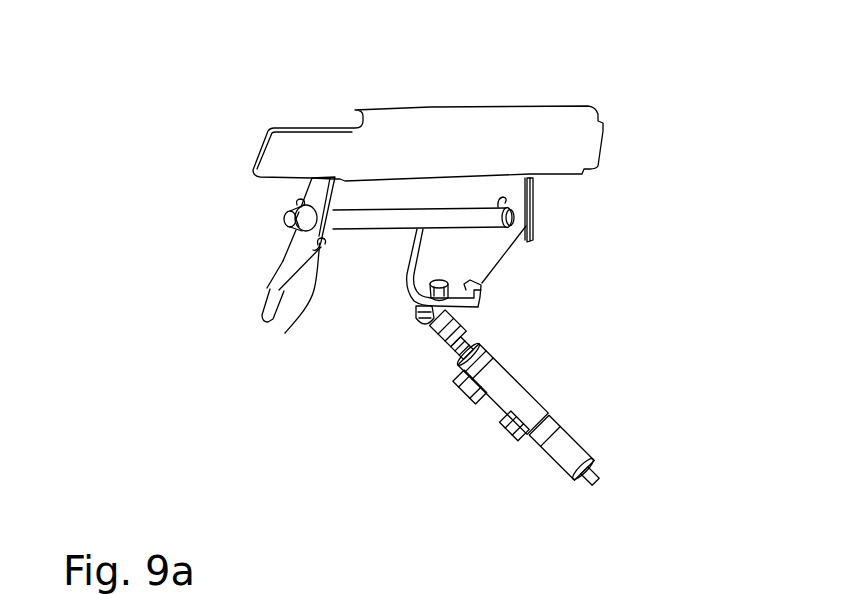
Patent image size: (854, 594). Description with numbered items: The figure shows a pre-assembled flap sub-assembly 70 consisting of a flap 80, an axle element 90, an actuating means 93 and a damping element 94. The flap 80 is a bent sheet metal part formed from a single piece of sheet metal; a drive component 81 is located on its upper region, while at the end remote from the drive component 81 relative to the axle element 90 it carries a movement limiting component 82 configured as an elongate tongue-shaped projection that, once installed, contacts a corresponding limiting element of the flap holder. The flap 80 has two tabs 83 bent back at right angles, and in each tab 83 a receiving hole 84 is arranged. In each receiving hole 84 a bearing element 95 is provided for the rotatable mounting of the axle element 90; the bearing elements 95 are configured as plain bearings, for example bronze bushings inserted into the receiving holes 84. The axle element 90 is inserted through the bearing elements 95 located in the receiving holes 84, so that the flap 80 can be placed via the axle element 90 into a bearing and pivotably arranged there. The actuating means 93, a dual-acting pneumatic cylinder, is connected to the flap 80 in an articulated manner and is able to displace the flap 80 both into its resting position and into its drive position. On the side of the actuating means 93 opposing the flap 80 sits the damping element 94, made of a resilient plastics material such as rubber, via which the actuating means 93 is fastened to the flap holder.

The flap sub-assembly 70 is at (203, 99).
The flap 80 is at (617, 153).
The drive component 81 is at (462, 146).
The movement limiting component 82 is at (262, 308).
The tabs 83 is at (290, 249).
The receiving hole 84 is at (284, 204).
The axle element 90 is at (376, 222).
The actuating means 93 is at (507, 393).
The damping element 94 is at (575, 450).
The bearing element 95 is at (285, 333).